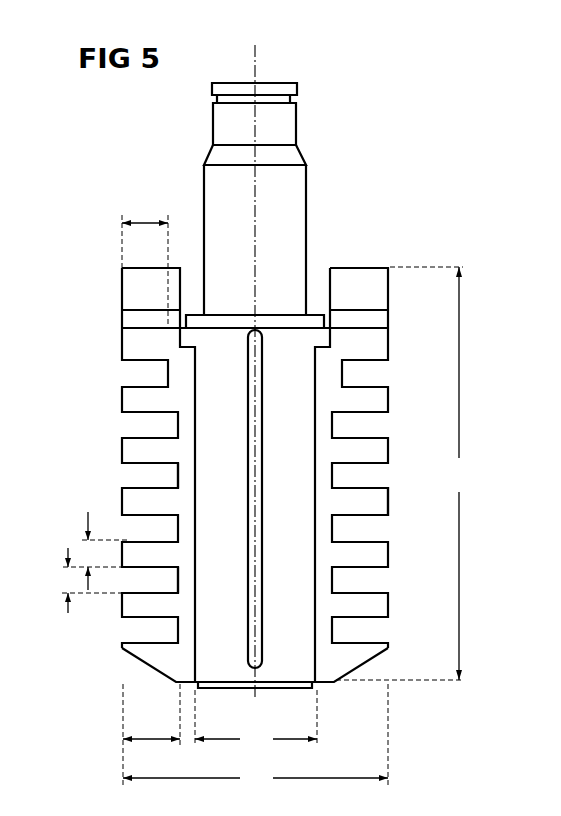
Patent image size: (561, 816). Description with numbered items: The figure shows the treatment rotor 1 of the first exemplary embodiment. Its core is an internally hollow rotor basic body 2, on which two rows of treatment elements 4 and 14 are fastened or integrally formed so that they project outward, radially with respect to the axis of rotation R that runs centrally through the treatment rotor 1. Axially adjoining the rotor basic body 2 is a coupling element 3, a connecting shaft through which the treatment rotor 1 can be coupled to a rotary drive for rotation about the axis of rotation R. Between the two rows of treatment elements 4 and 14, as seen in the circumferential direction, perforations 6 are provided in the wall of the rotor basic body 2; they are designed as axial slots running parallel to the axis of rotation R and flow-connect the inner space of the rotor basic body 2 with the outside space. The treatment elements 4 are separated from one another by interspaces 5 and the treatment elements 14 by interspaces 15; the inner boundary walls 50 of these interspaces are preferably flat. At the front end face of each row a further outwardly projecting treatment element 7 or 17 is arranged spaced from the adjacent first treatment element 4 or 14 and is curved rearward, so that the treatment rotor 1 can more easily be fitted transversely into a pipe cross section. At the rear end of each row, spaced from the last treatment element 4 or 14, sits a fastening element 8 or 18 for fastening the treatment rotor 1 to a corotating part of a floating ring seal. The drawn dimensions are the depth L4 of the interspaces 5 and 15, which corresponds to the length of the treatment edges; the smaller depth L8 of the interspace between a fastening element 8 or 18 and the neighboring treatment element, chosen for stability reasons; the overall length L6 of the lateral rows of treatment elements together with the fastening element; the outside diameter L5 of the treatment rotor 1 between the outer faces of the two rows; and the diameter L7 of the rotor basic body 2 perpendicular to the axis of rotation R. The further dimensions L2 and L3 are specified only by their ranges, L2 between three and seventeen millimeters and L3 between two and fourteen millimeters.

The treatment rotor 1 is at (402, 196).
The rotor basic body 2 is at (285, 580).
The coupling element 3 is at (277, 208).
The treatment elements 4 is at (362, 500).
The interspaces 5 is at (353, 423).
The perforations 6 is at (253, 400).
The treatment element 7 is at (367, 665).
The fastening element 8 is at (365, 290).
The treatment elements 14 is at (145, 449).
The interspaces 15 is at (148, 527).
The treatment element 17 is at (155, 657).
The fastening element 18 is at (130, 292).
The inner boundary walls 50 is at (177, 575).
The axis of rotation R is at (257, 63).
The dimension L2 is at (88, 556).
The dimension L3 is at (63, 582).
The length of treatment edges L4 is at (151, 734).
The outside diameter L5 is at (255, 737).
The overall length L6 is at (403, 473).
The diameter of basic body L7 is at (256, 720).
The depth L8 is at (145, 259).